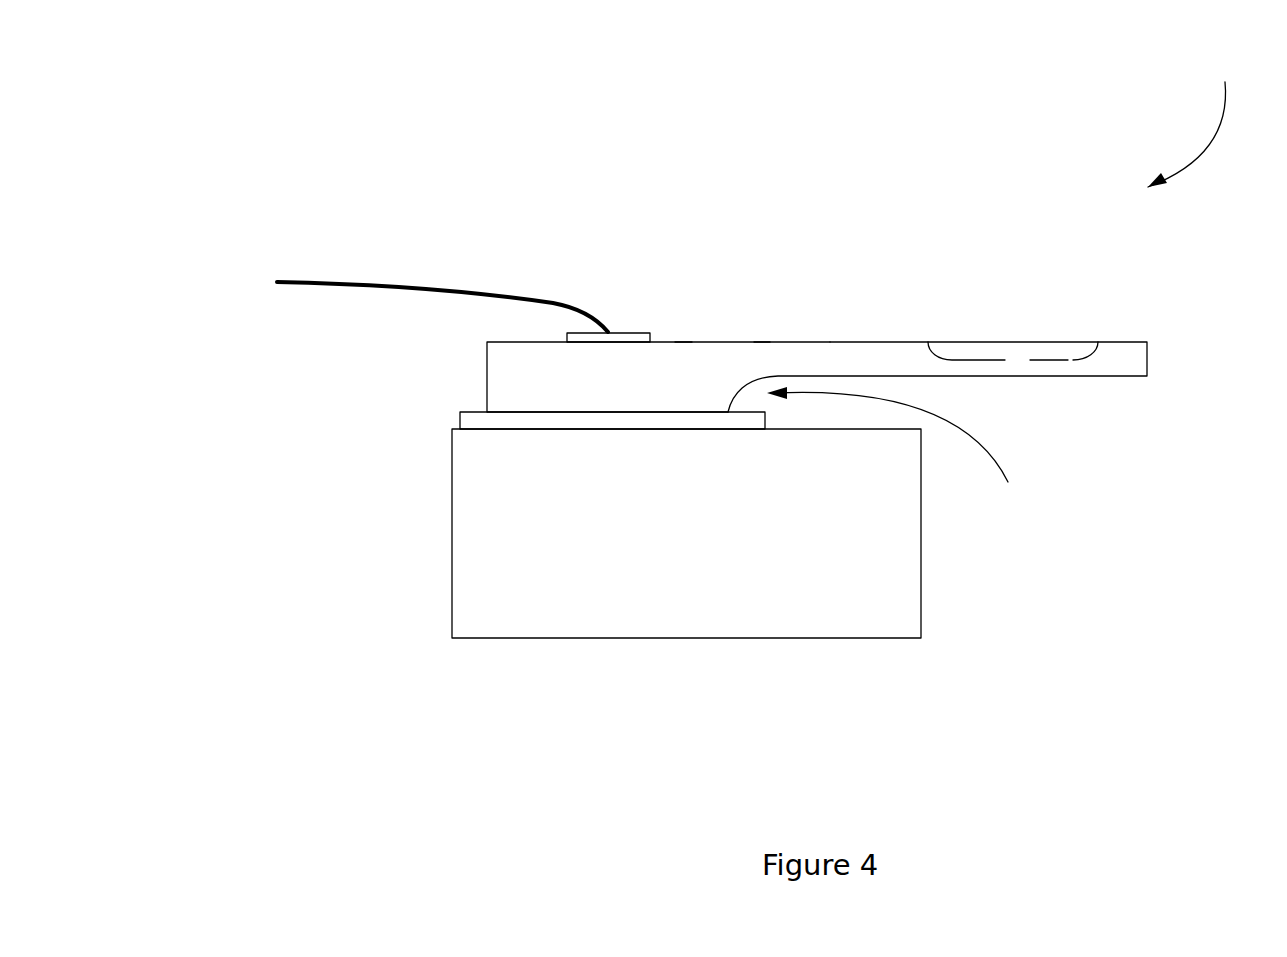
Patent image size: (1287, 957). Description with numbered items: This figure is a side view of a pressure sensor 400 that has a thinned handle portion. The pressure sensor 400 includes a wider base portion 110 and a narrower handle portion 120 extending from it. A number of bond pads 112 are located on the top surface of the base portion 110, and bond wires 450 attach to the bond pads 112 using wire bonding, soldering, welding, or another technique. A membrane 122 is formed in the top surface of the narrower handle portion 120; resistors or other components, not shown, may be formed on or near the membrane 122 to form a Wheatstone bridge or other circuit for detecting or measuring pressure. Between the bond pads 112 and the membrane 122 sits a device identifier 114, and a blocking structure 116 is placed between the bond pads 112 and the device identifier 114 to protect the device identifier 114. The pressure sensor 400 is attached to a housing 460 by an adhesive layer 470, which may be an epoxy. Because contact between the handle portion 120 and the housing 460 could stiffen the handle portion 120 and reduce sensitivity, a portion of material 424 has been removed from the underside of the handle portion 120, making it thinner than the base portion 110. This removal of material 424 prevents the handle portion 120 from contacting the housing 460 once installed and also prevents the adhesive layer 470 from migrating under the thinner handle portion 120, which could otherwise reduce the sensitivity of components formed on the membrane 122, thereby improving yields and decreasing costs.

The pressure sensor 400 is at (1190, 118).
The base portion 110 is at (522, 377).
The bond pads 112 is at (632, 333).
The device identifier 114 is at (762, 342).
The blocking structure 116 is at (683, 342).
The handle portion 120 is at (862, 342).
The membrane 122 is at (989, 338).
The removed material 424 is at (904, 452).
The bond wires 450 is at (430, 278).
The housing 460 is at (513, 507).
The adhesive layer 470 is at (460, 422).